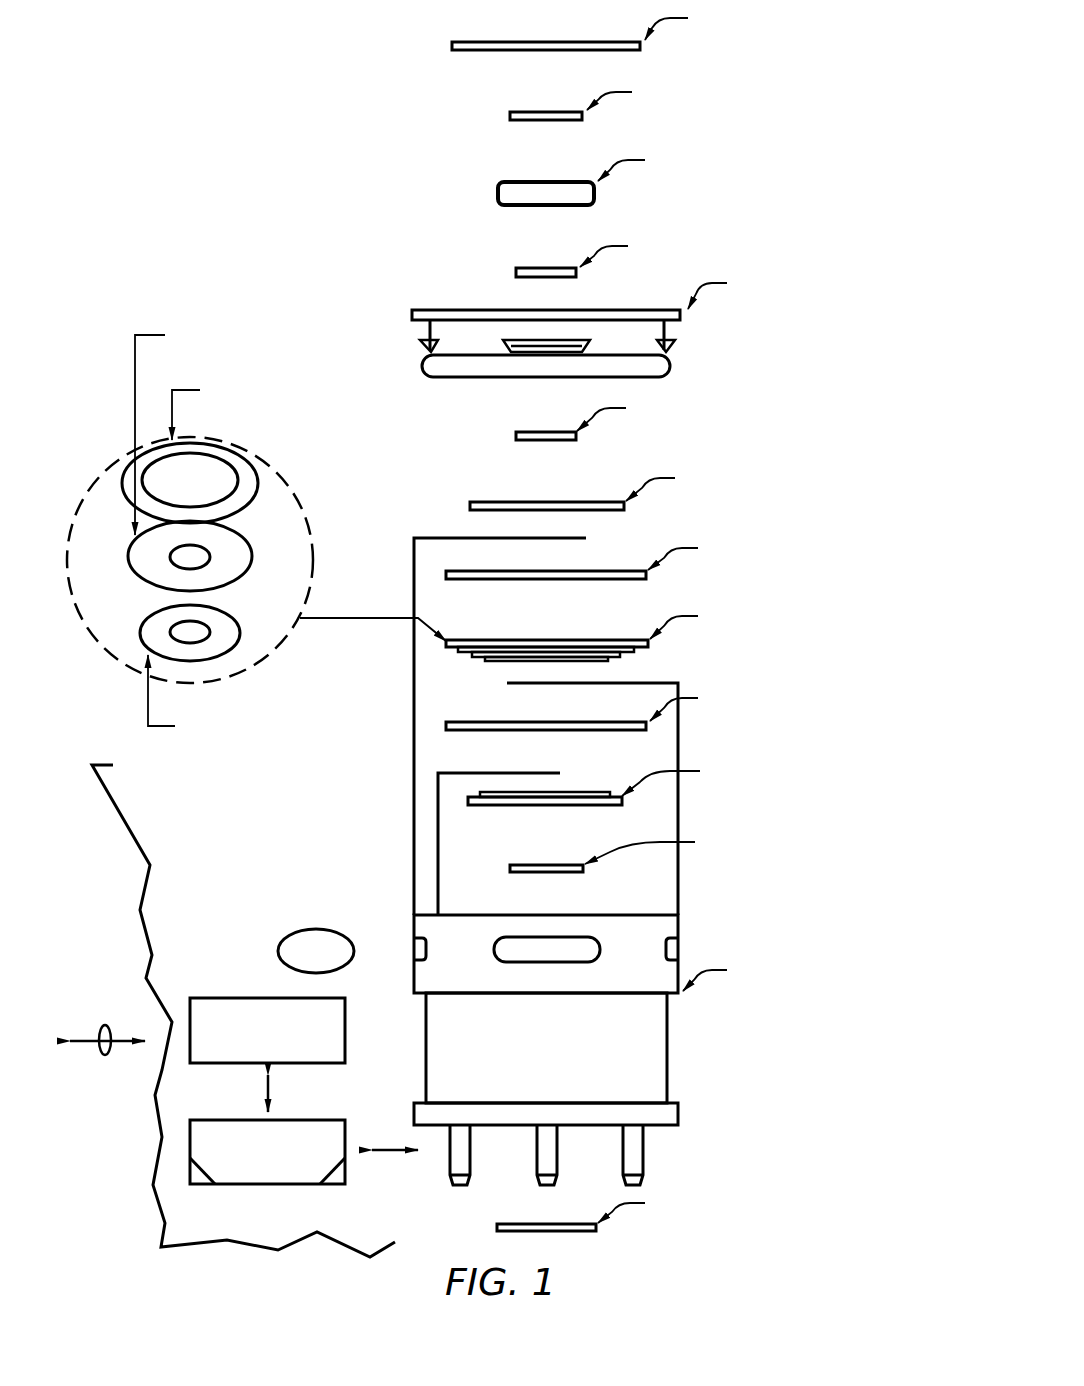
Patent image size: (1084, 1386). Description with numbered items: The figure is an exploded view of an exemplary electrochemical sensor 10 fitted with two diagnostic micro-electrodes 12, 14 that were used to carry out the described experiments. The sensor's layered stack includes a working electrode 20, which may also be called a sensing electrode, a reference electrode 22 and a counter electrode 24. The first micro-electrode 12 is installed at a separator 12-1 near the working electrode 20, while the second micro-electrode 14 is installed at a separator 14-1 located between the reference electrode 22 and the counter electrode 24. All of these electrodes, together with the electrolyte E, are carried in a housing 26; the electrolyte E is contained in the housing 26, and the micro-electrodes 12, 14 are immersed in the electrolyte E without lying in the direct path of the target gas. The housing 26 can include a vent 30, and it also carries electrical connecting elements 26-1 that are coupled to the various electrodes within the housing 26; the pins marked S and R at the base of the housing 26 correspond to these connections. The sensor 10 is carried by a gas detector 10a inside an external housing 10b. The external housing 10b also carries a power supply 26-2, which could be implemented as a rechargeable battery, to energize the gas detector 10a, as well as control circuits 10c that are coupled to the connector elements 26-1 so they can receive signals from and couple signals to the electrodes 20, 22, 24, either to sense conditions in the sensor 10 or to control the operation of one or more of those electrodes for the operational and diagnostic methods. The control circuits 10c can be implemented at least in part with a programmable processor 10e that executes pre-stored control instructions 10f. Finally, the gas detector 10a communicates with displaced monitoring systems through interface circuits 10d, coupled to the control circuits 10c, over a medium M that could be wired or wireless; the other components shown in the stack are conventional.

The electrochemical sensor 10 is at (262, 88).
The gas detector 10a is at (128, 932).
The external housing 10b is at (145, 862).
The control circuits 10c is at (300, 1120).
The interface circuits 10d is at (345, 1005).
The programmable processor 10e is at (342, 1180).
The pre-stored control instructions 10f is at (205, 1180).
The diagnostic micro-electrode 12 is at (490, 580).
The separator 12-1 is at (793, 533).
The diagnostic micro-electrode 14 is at (478, 731).
The separator 14-1 is at (793, 688).
The working electrode 20 is at (835, 464).
The reference electrode 22 is at (860, 601).
The counter electrode 24 is at (860, 757).
The housing 26 is at (426, 1043).
The electrical connecting elements 26-1 is at (705, 1150).
The power supply 26-2 is at (316, 951).
The vent 30 is at (763, 957).
The electrolyte E is at (452, 905).
The medium M is at (105, 1055).
The sensing pin S is at (503, 1087).
The reference pin R is at (591, 1087).